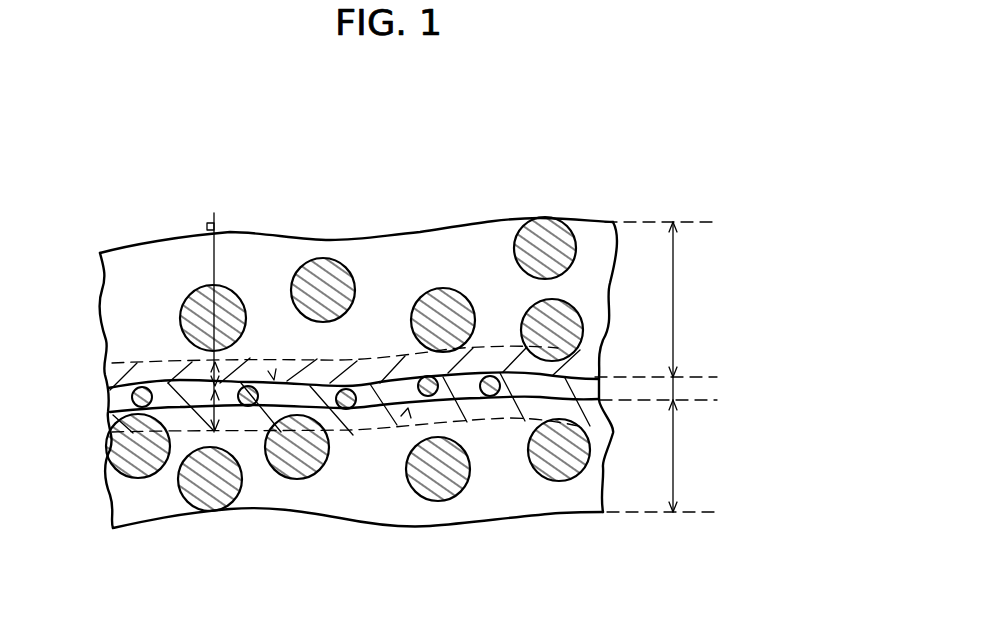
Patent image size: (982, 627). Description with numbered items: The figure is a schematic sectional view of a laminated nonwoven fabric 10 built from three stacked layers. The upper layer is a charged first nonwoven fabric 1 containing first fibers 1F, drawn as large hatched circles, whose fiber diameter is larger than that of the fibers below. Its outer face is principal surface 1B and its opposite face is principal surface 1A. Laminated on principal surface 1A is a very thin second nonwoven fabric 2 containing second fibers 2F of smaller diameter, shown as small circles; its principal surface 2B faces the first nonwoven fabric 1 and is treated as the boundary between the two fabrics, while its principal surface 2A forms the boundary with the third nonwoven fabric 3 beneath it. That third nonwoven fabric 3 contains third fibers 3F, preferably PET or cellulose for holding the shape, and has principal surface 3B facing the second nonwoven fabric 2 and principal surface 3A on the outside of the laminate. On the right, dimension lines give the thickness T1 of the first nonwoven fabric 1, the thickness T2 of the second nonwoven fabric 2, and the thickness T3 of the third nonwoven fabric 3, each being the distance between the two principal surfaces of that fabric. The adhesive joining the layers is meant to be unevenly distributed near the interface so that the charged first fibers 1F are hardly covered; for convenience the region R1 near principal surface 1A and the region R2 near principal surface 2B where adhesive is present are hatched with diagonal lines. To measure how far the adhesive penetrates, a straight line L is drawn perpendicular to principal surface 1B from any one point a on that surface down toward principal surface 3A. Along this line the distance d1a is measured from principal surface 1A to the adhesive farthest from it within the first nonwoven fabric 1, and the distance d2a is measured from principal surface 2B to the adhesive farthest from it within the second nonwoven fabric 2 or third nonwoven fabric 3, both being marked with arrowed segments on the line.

The laminated nonwoven fabric 10 is at (358, 155).
The first nonwoven fabric 1 is at (82, 246).
The second nonwoven fabric 2 is at (84, 397).
The third nonwoven fabric 3 is at (84, 426).
The principal surface 1A is at (581, 383).
The principal surface 1B is at (592, 213).
The first fibers 1F is at (332, 273).
The principal surface 2A is at (590, 400).
The principal surface 2B is at (573, 374).
The second fibers 2F is at (345, 412).
The principal surface 3A is at (532, 522).
The principal surface 3B is at (580, 401).
The third fibers 3F is at (456, 492).
The straight line L is at (214, 276).
The point a is at (215, 227).
The distance d1a is at (207, 383).
The distance d2a is at (212, 428).
The region R1 is at (273, 378).
The region R2 is at (408, 408).
The thickness T1 is at (656, 299).
The thickness T2 is at (690, 388).
The thickness T3 is at (658, 456).